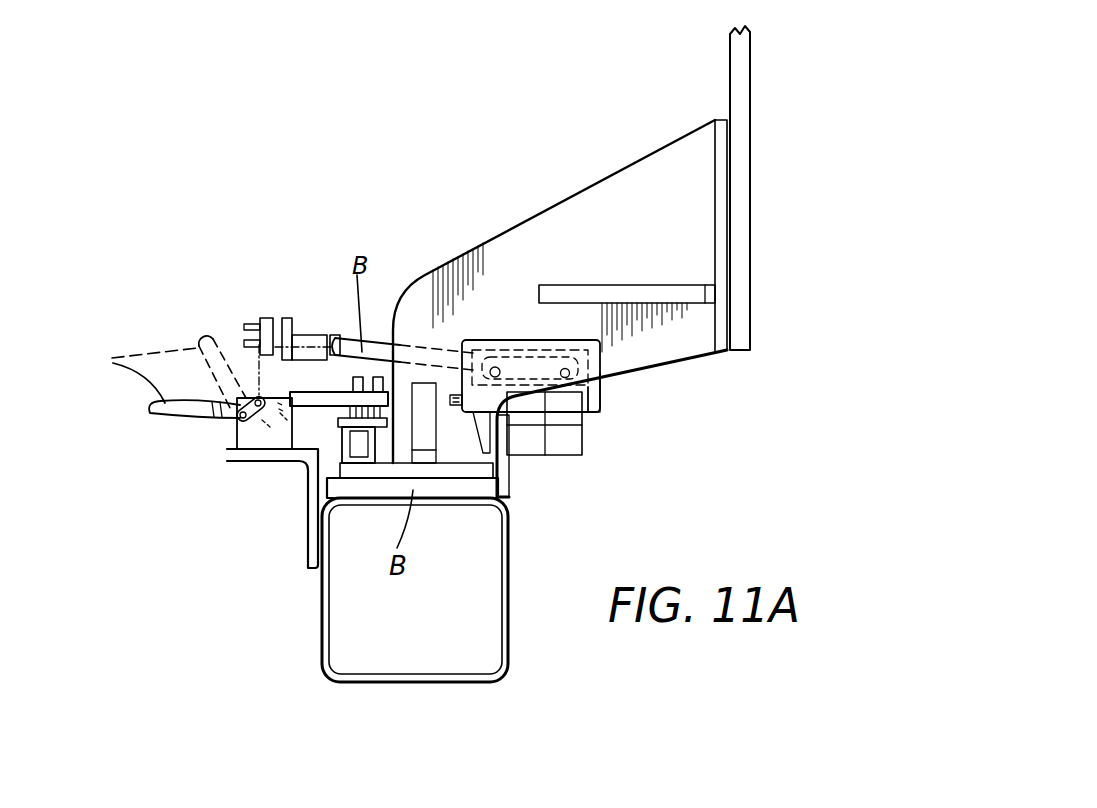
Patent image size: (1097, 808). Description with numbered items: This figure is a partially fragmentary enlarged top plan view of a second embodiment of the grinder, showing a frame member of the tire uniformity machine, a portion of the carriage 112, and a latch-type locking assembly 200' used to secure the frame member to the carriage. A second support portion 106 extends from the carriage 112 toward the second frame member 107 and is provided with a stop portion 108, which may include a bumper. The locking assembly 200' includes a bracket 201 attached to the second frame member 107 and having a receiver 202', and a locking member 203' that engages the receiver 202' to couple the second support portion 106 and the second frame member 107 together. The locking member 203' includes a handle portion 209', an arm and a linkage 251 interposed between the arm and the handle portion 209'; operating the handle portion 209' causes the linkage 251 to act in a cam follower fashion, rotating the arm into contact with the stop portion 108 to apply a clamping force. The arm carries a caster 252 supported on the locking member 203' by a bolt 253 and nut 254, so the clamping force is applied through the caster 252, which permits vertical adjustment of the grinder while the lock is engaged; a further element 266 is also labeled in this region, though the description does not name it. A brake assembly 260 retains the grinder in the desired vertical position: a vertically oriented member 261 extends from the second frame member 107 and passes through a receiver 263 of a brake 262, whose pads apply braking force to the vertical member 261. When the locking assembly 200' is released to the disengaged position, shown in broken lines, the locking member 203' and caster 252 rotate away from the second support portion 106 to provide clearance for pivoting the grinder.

The second support portion 106 is at (575, 210).
The second frame member 107 is at (325, 648).
The stop portion 108 is at (453, 468).
The carriage 112 is at (743, 77).
The locking assembly 200' is at (153, 347).
The bracket 201 is at (315, 503).
The receiver 202' is at (200, 437).
The locking member 203' is at (177, 343).
The handle portion 209' is at (123, 374).
The linkage 251 is at (240, 400).
The caster 252 is at (360, 450).
The bolt 253 is at (358, 378).
The nut 254 is at (352, 388).
The brake assembly 260 is at (596, 456).
The vertically oriented member 261 is at (512, 440).
The brake 262 is at (570, 440).
The receiver 263 is at (588, 427).
The solenoid 266 is at (340, 345).